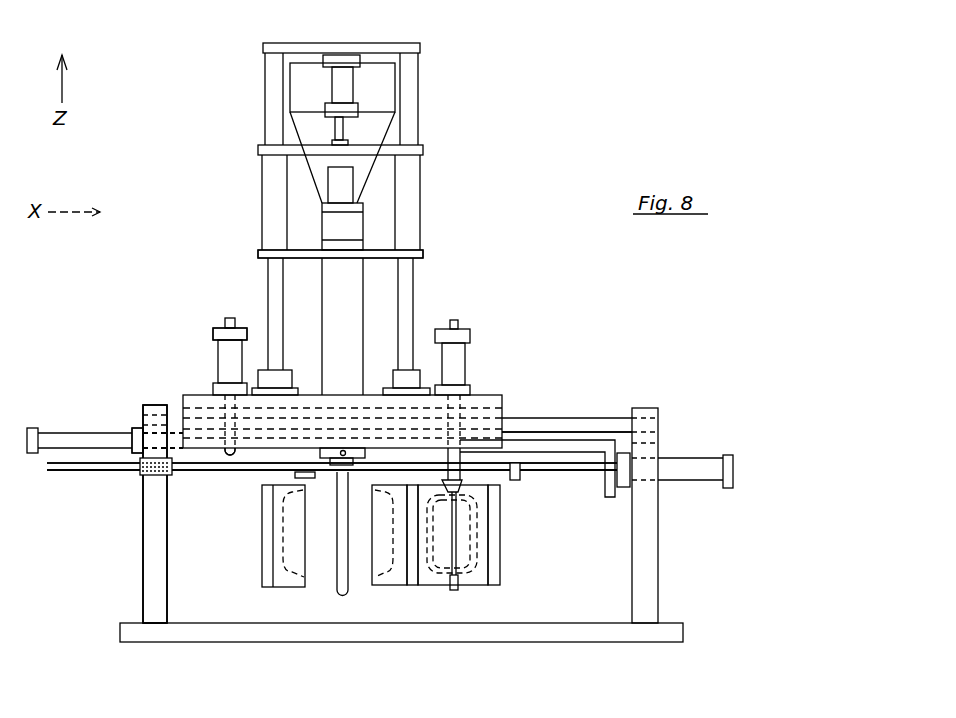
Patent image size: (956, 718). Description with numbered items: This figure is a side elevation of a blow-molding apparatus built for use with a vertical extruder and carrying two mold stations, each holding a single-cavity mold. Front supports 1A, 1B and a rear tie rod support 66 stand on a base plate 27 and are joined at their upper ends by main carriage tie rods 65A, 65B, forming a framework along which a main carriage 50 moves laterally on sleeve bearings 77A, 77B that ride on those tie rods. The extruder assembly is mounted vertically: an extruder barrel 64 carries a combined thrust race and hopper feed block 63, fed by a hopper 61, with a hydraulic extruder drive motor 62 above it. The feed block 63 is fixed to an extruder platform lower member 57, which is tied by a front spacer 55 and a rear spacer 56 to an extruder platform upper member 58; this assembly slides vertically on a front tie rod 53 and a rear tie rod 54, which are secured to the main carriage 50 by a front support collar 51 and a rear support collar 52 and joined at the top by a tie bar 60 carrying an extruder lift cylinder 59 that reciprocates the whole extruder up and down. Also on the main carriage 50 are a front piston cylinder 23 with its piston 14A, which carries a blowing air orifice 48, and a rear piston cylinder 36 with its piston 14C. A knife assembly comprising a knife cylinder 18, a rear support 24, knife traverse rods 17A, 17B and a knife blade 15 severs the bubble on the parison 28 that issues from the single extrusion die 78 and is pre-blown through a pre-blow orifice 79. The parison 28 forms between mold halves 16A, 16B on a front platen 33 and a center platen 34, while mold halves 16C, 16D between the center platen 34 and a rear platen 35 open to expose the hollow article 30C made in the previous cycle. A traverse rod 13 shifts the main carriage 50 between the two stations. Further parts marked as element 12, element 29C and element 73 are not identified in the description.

The front support 1A is at (152, 538).
The front support 1B is at (106, 529).
The left adjusting rod handle 12 is at (98, 442).
The traverse rod 13 is at (180, 437).
The piston 14A is at (227, 455).
The piston 14C is at (453, 457).
The knife blade 15 is at (300, 477).
The mold half 16A is at (297, 583).
The mold half 16B is at (395, 578).
The mold half 16C is at (432, 577).
The mold half 16D is at (478, 578).
The knife traverse rod 17A is at (493, 470).
The knife traverse rod 17B is at (389, 590).
The knife cylinder 18 is at (668, 475).
The front piston cylinder 23 is at (270, 378).
The rear support 24 is at (522, 483).
The base plate 27 is at (670, 633).
The extruded parison 28 is at (343, 593).
The guide rod 29C is at (493, 470).
The hollow article 30C is at (460, 578).
The front platen 33 is at (300, 493).
The center platen 34 is at (409, 578).
The rear platen 35 is at (493, 557).
The rear piston cylinder 36 is at (470, 392).
The blowing air orifice 48 is at (223, 327).
The main carriage 50 is at (197, 415).
The front support collar 51 is at (228, 380).
The rear support collar 52 is at (407, 378).
The front tie rod 53 is at (273, 310).
The rear tie rod 54 is at (408, 307).
The front spacer 55 is at (273, 205).
The rear spacer 56 is at (412, 243).
The extruder platform lower member 57 is at (258, 253).
The extruder platform upper member 58 is at (258, 148).
The extruder lift cylinder 59 is at (338, 92).
The tie bar 60 is at (420, 48).
The hopper 61 is at (375, 136).
The hydraulic extruder drive motor 62 is at (347, 188).
The combined thrust race and hopper feed block 63 is at (355, 227).
The extruder barrel 64 is at (343, 298).
The main carriage tie rod 65A is at (618, 425).
The main carriage tie rod 65B is at (645, 413).
The rear tie rod support 66 is at (650, 452).
The right cylinder cap 73 is at (458, 323).
The sleeve bearing 77A is at (183, 433).
The sleeve bearing 77B is at (106, 421).
The single extrusion die 78 is at (352, 466).
The pre-blow orifice 79 is at (343, 462).